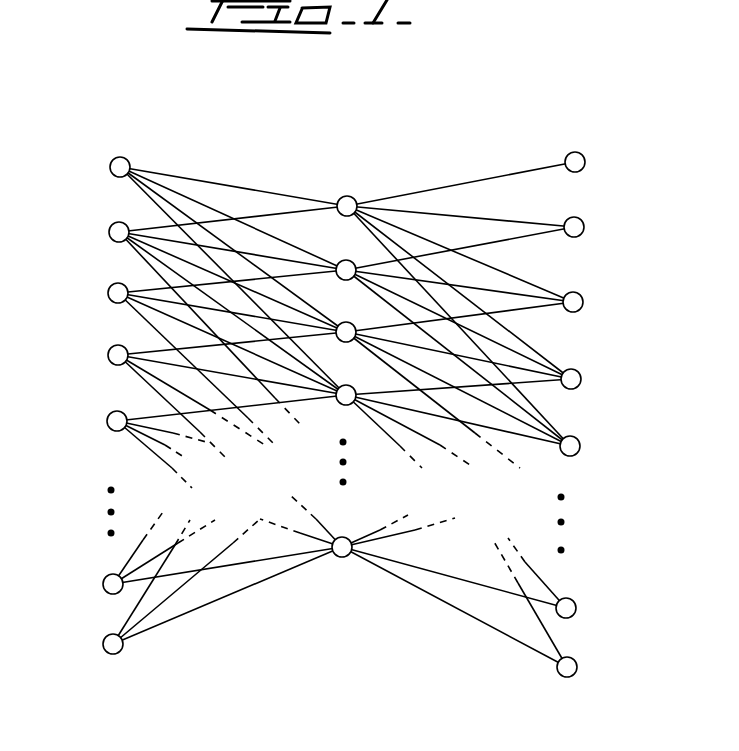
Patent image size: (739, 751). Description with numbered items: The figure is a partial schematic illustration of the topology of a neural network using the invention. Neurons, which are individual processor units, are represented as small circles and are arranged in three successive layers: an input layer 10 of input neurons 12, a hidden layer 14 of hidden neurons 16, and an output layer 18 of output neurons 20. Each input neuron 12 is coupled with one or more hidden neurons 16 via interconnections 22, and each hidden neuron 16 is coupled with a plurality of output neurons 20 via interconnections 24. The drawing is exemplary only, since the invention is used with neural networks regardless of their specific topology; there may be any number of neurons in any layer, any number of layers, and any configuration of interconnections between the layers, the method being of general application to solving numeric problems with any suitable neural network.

The input layer 10 is at (121, 128).
The input neurons 12 is at (108, 288).
The hidden layer 14 is at (349, 126).
The hidden neurons 16 is at (357, 197).
The output layer 18 is at (575, 124).
The output neurons 20 is at (584, 296).
The interconnections 22 is at (211, 207).
The interconnections 24 is at (450, 215).